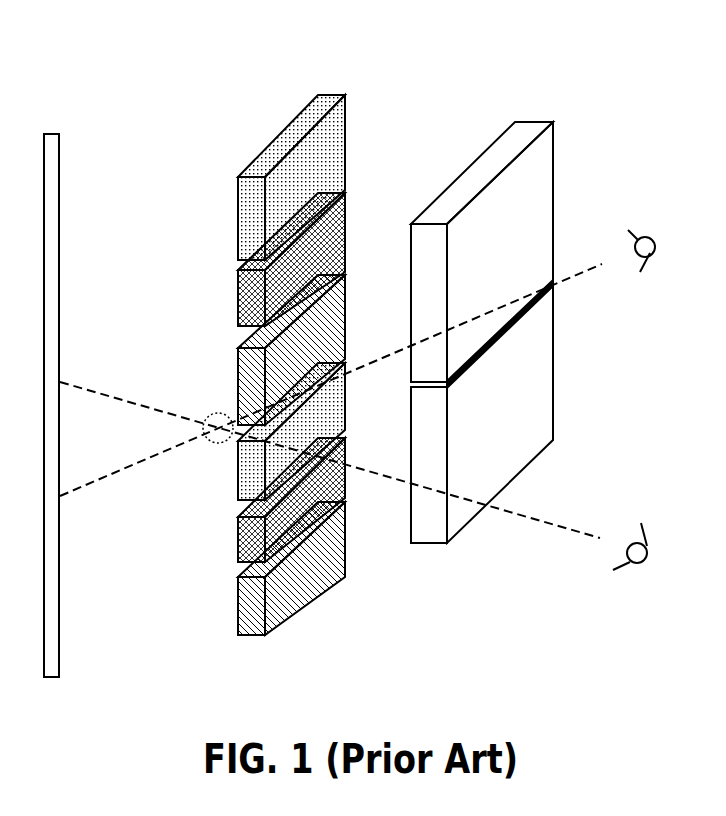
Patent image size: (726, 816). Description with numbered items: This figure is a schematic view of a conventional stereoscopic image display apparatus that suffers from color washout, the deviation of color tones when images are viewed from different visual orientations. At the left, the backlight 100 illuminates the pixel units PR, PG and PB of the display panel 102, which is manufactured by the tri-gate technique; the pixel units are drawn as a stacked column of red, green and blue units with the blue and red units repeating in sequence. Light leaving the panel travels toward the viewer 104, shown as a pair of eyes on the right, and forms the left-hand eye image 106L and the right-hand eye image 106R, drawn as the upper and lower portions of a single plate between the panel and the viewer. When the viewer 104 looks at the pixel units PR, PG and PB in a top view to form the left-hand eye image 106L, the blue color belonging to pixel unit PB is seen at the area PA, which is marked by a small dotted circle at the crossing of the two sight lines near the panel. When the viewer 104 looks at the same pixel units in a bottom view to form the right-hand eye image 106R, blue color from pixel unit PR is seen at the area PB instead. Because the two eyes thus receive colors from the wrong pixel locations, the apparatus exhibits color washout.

The backlight 100 is at (48, 130).
The display panel 102 is at (247, 327).
The viewer 104 is at (641, 237).
The left-hand eye image 106L is at (492, 142).
The right-hand eye image 106R is at (474, 522).
The pixel unit PR is at (238, 217).
The pixel unit PG is at (238, 302).
The pixel unit PB is at (238, 386).
The area PA is at (203, 428).